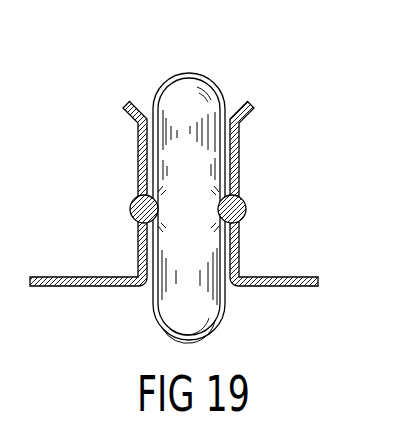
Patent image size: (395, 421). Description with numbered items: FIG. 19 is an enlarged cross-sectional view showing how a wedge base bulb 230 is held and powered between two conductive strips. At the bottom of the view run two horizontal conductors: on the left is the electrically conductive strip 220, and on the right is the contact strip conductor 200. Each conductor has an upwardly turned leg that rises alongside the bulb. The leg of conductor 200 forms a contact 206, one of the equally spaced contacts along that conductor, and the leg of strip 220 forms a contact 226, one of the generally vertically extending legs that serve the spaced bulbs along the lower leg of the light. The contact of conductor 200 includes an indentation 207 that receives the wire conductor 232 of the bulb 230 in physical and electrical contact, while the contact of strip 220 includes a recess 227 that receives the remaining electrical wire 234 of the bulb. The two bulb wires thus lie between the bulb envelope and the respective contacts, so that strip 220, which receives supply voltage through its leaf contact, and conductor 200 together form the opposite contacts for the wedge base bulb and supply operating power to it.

The wedge base bulb 230 is at (191, 70).
The contact 226 is at (138, 124).
The recess 227 is at (130, 204).
The conductive strip 220 is at (55, 287).
The contact 206 is at (240, 149).
The indentation 207 is at (245, 204).
The conductor 200 is at (258, 287).
The wire conductor 232 is at (221, 199).
The electrical wire 234 is at (188, 235).